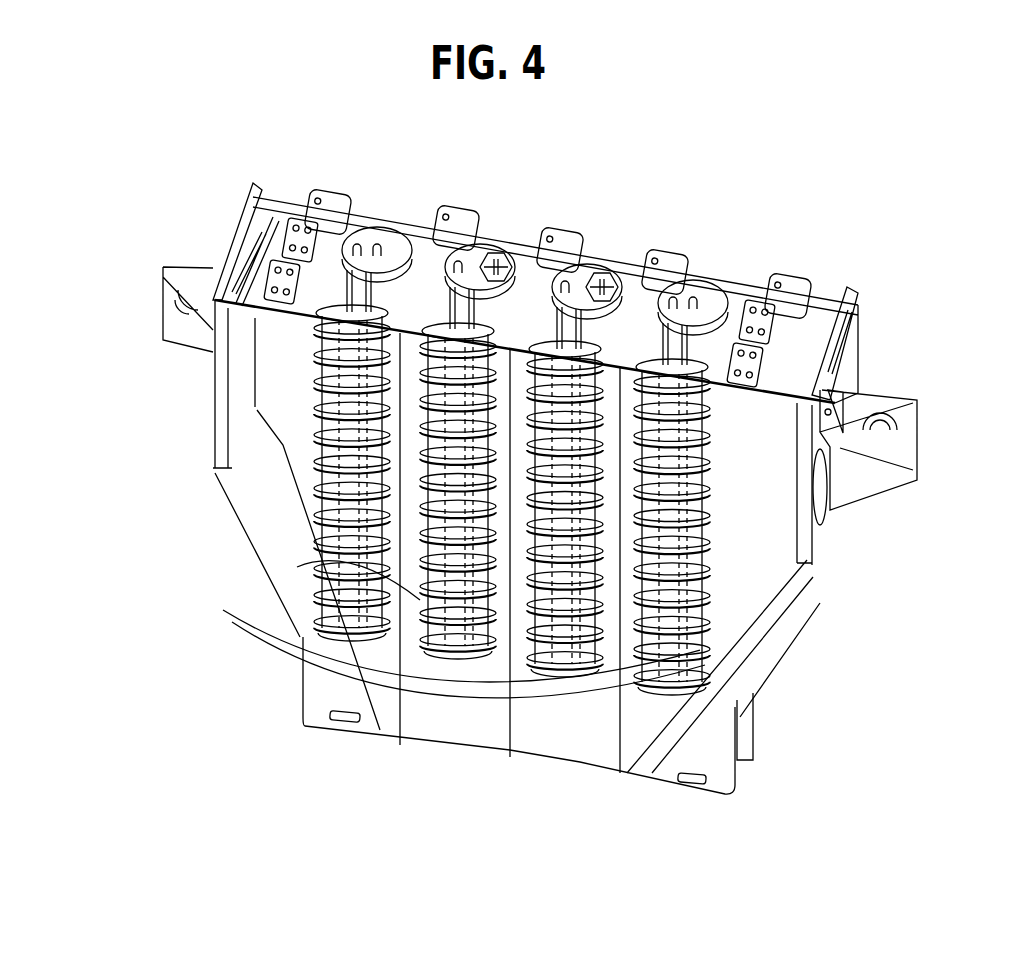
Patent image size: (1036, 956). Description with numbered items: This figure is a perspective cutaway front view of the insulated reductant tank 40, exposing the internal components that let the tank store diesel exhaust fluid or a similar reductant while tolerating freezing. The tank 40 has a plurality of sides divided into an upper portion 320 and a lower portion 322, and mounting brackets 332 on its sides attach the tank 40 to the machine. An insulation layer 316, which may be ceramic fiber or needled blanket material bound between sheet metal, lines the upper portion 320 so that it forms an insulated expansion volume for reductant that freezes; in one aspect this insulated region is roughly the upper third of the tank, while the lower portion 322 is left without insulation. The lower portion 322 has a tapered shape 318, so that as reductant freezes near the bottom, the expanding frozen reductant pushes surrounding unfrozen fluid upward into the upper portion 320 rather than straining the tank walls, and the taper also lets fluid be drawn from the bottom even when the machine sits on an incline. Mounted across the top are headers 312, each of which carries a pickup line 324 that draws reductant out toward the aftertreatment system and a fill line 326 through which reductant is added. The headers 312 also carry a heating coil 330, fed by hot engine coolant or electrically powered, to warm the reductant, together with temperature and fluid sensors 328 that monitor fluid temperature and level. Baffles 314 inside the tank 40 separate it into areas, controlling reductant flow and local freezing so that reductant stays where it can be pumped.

The insulated reductant tank 40 is at (166, 188).
The header 312 is at (323, 233).
The baffle 314 is at (425, 705).
The insulation layer 316 is at (213, 373).
The tapered shape 318 is at (750, 706).
The upper portion 320 is at (955, 357).
The lower portion 322 is at (913, 633).
The pickup line 324 is at (312, 553).
The fill line 326 is at (712, 513).
The temperature and fluid sensors 328 is at (490, 240).
The heating coil 330 is at (375, 500).
The mounting bracket 332 is at (160, 303).